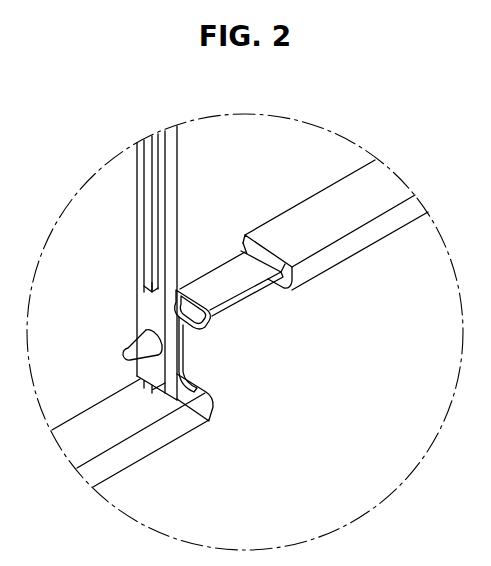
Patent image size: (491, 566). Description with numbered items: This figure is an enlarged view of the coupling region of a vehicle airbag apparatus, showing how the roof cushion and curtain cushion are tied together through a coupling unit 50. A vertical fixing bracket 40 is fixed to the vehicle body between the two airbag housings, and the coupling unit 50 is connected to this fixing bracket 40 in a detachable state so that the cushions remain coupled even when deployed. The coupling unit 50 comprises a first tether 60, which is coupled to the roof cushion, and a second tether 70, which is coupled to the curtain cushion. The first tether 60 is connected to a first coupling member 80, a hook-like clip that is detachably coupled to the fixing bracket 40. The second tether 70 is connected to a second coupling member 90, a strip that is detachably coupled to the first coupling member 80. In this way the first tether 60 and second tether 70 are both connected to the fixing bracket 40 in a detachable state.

The fixing bracket 40 is at (140, 229).
The coupling unit 50 is at (252, 321).
The first tether 60 is at (155, 442).
The second tether 70 is at (352, 245).
The first coupling member 80 is at (187, 345).
The second coupling member 90 is at (219, 276).